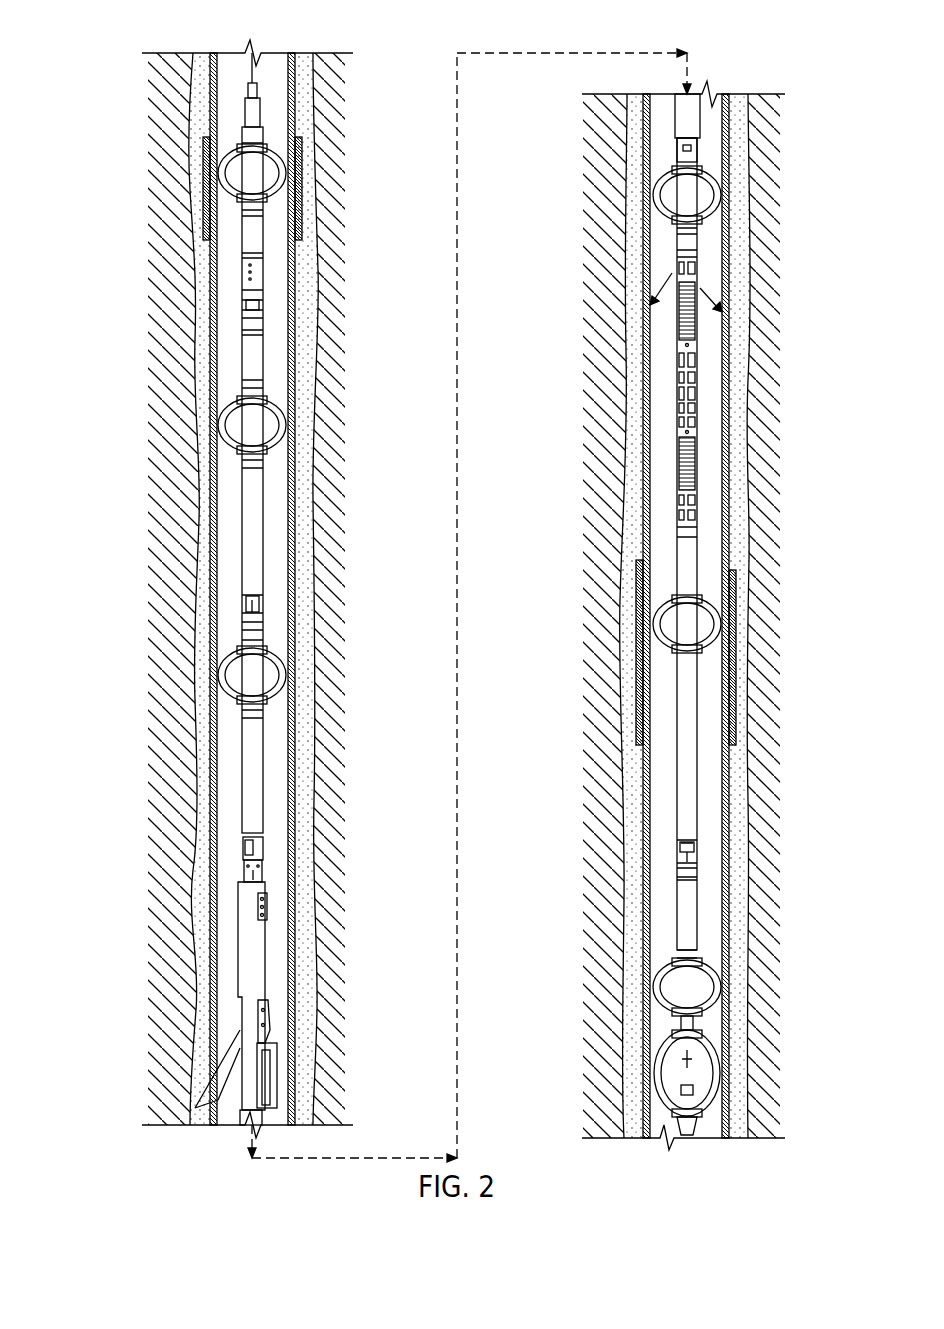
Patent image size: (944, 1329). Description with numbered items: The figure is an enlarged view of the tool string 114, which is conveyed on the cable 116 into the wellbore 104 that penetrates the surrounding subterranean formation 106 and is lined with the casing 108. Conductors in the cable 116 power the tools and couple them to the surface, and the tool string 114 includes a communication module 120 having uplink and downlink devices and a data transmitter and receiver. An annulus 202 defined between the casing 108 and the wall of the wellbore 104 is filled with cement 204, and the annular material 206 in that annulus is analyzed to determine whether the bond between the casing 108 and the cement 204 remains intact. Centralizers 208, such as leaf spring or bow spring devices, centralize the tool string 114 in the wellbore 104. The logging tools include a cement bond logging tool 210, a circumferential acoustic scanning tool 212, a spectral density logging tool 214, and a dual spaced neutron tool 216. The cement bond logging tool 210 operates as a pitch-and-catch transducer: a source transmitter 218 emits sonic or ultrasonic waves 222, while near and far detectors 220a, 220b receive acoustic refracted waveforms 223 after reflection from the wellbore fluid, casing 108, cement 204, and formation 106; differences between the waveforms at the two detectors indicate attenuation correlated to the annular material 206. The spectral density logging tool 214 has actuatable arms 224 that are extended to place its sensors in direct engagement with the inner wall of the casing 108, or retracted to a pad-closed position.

The wellbore 104 is at (193, 273).
The subterranean formation 106 is at (188, 320).
The casing 108 is at (212, 357).
The tool string 114 is at (97, 47).
The cable 116 is at (250, 70).
The communication module 120 is at (248, 135).
The annulus 202 is at (200, 512).
The cement 204 is at (200, 556).
The annular material 206 is at (206, 222).
The centralizer 208 is at (218, 173).
The cement bond logging tool 210 is at (683, 393).
The circumferential acoustic scanning tool 212 is at (706, 951).
The spectral density logging tool 214 is at (228, 1013).
The dual spaced neutron tool 216 is at (228, 765).
The source transmitter 218 is at (672, 273).
The near detector 220a is at (678, 405).
The far detector 220b is at (678, 508).
The sonic or ultrasonic waves 222 is at (700, 288).
The acoustic refracted waveforms 223 is at (665, 385).
The actuatable arm 224 is at (235, 1058).